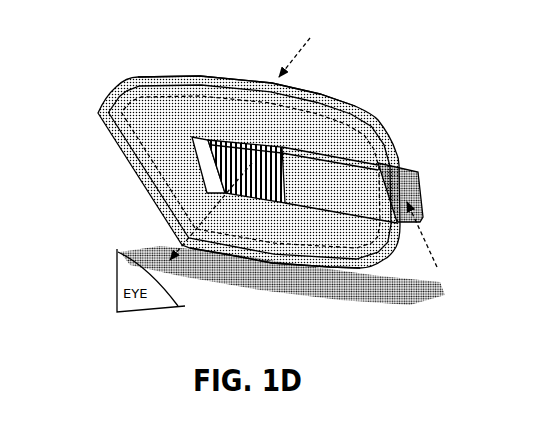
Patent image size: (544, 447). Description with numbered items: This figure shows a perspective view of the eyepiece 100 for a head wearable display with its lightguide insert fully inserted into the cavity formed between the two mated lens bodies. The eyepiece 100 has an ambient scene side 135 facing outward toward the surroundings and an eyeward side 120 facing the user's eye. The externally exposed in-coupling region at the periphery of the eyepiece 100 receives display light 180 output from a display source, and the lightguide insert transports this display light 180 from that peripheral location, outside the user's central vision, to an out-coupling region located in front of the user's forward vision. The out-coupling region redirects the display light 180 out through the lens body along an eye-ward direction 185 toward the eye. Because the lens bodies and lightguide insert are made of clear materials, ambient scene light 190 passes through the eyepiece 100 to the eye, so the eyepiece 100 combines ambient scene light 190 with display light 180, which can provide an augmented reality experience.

The eyepiece 100 is at (128, 63).
The ambient scene side 135 is at (394, 102).
The eyeward side 120 is at (270, 276).
The ambient scene light 190 is at (297, 53).
The eye-ward direction 185 is at (157, 245).
The display light 180 is at (435, 247).